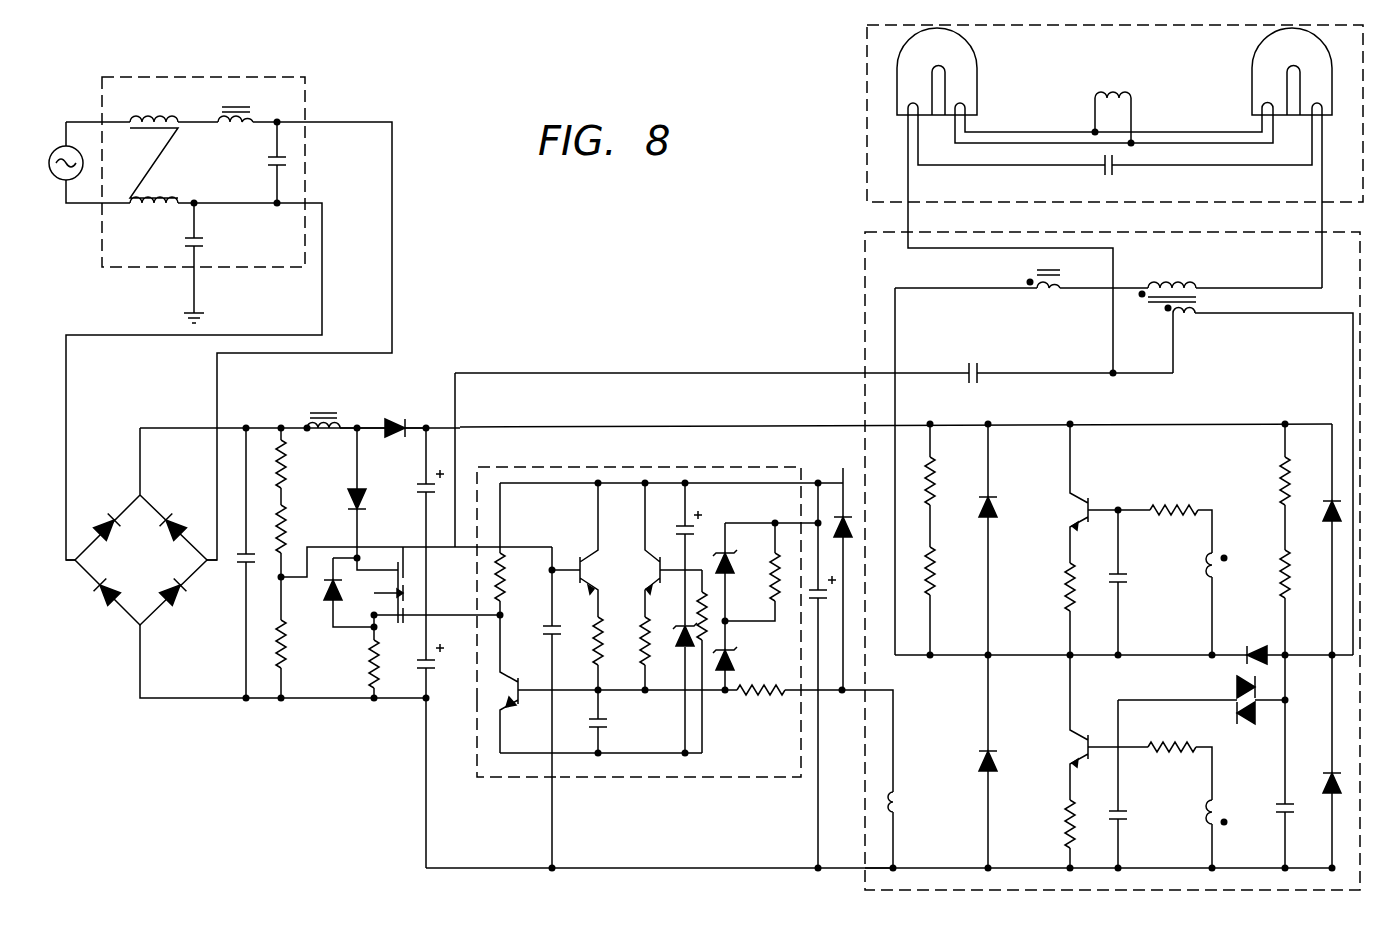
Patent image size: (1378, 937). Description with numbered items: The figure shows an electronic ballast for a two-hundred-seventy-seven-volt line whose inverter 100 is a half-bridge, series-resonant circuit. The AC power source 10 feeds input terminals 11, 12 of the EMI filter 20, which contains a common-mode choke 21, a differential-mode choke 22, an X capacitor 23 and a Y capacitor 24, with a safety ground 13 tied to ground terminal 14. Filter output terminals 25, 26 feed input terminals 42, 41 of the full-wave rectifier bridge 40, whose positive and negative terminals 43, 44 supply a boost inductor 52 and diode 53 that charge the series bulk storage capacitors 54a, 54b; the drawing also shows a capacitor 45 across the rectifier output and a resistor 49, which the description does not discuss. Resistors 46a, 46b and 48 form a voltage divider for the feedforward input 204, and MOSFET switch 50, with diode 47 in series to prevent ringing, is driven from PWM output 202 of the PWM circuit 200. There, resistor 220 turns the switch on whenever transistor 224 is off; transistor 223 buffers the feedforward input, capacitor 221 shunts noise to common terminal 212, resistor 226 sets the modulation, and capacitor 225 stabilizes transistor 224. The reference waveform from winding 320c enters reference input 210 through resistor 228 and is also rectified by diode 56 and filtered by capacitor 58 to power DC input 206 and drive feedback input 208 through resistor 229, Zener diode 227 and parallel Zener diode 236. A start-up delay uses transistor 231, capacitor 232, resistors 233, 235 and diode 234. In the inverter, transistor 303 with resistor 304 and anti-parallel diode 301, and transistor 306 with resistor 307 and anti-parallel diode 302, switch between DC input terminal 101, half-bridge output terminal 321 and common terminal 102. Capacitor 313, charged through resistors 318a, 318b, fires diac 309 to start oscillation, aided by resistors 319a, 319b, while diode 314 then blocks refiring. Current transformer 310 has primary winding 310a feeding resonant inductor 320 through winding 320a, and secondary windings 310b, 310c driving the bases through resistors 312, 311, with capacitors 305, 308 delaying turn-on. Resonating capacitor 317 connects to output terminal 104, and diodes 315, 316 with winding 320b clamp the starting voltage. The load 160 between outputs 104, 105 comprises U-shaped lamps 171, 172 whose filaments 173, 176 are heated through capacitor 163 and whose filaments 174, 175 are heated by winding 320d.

The AC power source 10 is at (84, 163).
The input terminal 11 is at (66, 122).
The input terminal 12 is at (66, 203).
The safety ground 13 is at (194, 305).
The ground terminal 14 is at (194, 280).
The electromagnetic interference filter 20 is at (305, 92).
The common-mode choke 21 is at (178, 120).
The differential-mode choke 22 is at (228, 105).
The X capacitor 23 is at (275, 160).
The Y capacitor 24 is at (198, 240).
The output terminal 25 is at (305, 122).
The output terminal 26 is at (322, 203).
The full-wave rectifier bridge assembly 40 is at (78, 620).
The input terminal 41 is at (68, 562).
The input terminal 42 is at (217, 525).
The positive terminal 43 is at (172, 425).
The negative terminal 44 is at (140, 650).
The filter capacitor 45 is at (244, 575).
The resistor 46a is at (288, 455).
The resistor 46b is at (288, 525).
The diode 47 is at (362, 500).
The resistor 48 is at (288, 655).
The resistor 49 is at (368, 680).
The MOSFET power switch 50 is at (330, 610).
The boost inductor 52 is at (322, 415).
The diode 53 is at (395, 420).
The bulk storage capacitor 54a is at (425, 480).
The bulk storage capacitor 54b is at (425, 668).
The diode 56 is at (843, 475).
The capacitor 58 is at (812, 598).
The inverter 100 is at (865, 285).
The DC input terminal 101 is at (862, 425).
The common terminal 102 is at (862, 870).
The inverter output terminal 104 is at (908, 225).
The inverter output terminal 105 is at (1322, 210).
The load 160 is at (867, 165).
The capacitor 163 is at (1105, 170).
The U-shaped lamp 171 is at (975, 60).
The U-shaped lamp 172 is at (1255, 60).
The filament 173 is at (905, 118).
The filament 174 is at (978, 105).
The filament 175 is at (1252, 112).
The filament 176 is at (1322, 116).
The PWM circuit 200 is at (477, 790).
The PWM output 202 is at (475, 612).
The feedforward input 204 is at (472, 545).
The DC input 206 is at (780, 477).
The feedback input 208 is at (800, 523).
The reference waveform input 210 is at (800, 693).
The common terminal 212 is at (553, 812).
The resistor 220 is at (505, 585).
The capacitor 221 is at (550, 625).
The transistor 223 is at (598, 540).
The transistor 224 is at (514, 680).
The capacitor 225 is at (600, 720).
The resistor 226 is at (597, 645).
The Zener diode 227 is at (733, 660).
The resistor 228 is at (760, 700).
The resistor 229 is at (772, 555).
The transistor 231 is at (645, 545).
The capacitor 232 is at (680, 527).
The resistor 233 is at (643, 650).
The diode 234 is at (680, 628).
The resistor 235 is at (705, 600).
The Zener diode 236 is at (717, 565).
The diode 301 is at (998, 505).
The diode 302 is at (980, 760).
The power switching transistor 303 is at (1090, 495).
The resistor 304 is at (1065, 585).
The capacitor 305 is at (1125, 580).
The power switching transistor 306 is at (1085, 740).
The resistor 307 is at (1063, 825).
The capacitor 308 is at (1125, 812).
The diac 309 is at (1235, 684).
The current transformer 310 is at (990, 280).
The primary winding 310a is at (1050, 295).
The secondary winding 310b is at (1210, 565).
The secondary winding 310c is at (1218, 805).
The resistor 311 is at (1170, 747).
The resistor 312 is at (1175, 508).
The capacitor 313 is at (1283, 812).
The diode 314 is at (1257, 648).
The diode 315 is at (1330, 772).
The diode 316 is at (1328, 500).
The resonating capacitor 317 is at (980, 375).
The resistor 318a is at (1280, 478).
The resistor 318b is at (1280, 560).
The resistor 319a is at (938, 485).
The resistor 319b is at (938, 570).
The series-resonant inductor 320 is at (1245, 305).
The winding 320a is at (1148, 288).
The winding 320b is at (1180, 355).
The winding 320c is at (897, 808).
The winding 320d is at (1125, 98).
The half-bridge output terminal 321 is at (895, 395).